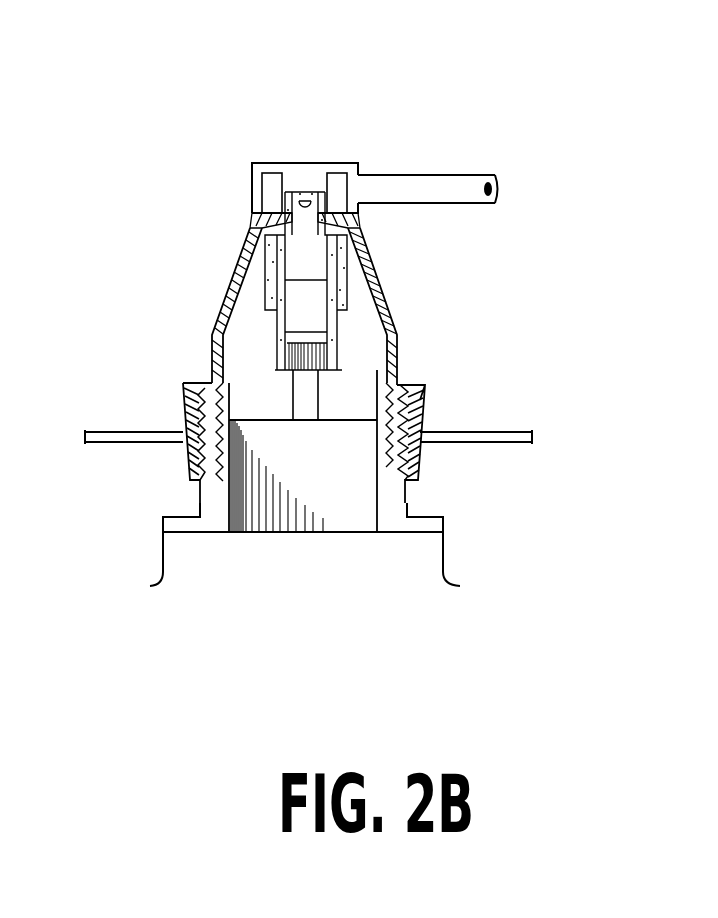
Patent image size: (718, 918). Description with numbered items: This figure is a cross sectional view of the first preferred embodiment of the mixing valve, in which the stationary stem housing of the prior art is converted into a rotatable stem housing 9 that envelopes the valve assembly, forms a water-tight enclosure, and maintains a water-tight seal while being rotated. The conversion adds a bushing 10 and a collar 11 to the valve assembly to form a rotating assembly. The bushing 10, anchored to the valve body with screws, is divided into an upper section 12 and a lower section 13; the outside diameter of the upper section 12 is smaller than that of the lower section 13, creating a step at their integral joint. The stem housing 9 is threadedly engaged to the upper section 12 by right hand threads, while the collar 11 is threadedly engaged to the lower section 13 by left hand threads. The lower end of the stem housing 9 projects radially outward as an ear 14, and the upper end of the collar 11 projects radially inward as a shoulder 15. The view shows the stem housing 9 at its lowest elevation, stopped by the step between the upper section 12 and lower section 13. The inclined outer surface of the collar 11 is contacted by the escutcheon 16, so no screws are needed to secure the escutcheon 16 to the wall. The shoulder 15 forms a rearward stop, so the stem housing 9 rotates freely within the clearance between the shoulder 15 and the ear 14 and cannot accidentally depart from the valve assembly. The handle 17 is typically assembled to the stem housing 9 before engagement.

The handle 17 is at (358, 163).
The stem housing 9 is at (383, 290).
The upper section 12 is at (398, 383).
The shoulder 15 is at (421, 400).
The collar 11 is at (423, 413).
The escutcheon 16 is at (532, 443).
The ear 14 is at (420, 433).
The bushing 10 is at (392, 458).
The lower section 13 is at (412, 505).